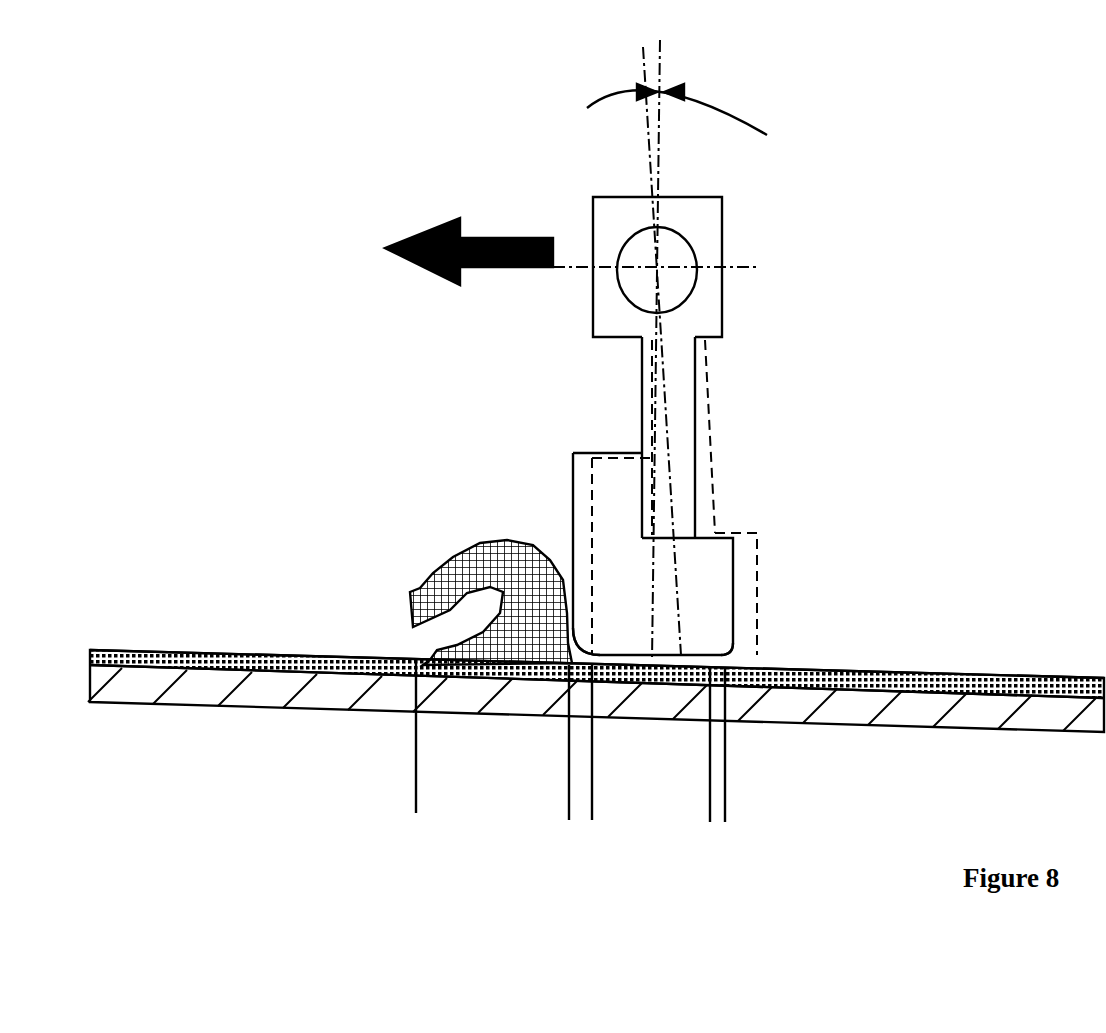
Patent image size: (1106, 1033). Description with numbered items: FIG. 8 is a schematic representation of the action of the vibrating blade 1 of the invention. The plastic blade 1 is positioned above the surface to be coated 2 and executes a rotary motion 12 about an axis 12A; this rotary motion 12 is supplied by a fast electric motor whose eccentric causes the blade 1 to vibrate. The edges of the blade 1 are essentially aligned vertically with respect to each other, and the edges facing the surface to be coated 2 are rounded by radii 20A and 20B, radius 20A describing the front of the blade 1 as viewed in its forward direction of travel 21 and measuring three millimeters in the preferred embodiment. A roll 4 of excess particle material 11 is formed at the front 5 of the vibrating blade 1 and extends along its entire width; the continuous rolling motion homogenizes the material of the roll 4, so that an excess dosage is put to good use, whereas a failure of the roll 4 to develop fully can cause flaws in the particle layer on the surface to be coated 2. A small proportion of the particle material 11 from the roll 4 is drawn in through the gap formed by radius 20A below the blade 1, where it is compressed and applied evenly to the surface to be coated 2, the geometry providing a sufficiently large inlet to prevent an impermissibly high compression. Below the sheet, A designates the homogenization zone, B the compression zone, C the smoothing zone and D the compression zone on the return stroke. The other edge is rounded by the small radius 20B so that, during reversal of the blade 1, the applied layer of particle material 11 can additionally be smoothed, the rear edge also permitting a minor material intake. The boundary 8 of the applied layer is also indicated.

The vibrating blade 1 is at (750, 533).
The surface to be coated 2 is at (843, 710).
The roll 4 is at (470, 550).
The front of the blade 5 is at (570, 485).
The coating boundary 8 is at (535, 678).
The particle material 11 is at (926, 670).
The rotary motion 12 is at (722, 106).
The axis 12A is at (678, 248).
The radius 20A is at (573, 637).
The radius 20B is at (752, 655).
The forward direction of travel 21 is at (497, 237).
The homogenization zone A is at (460, 736).
The compression zone B is at (579, 742).
The smoothing zone C is at (648, 782).
The compression zone on the return stroke D is at (715, 805).